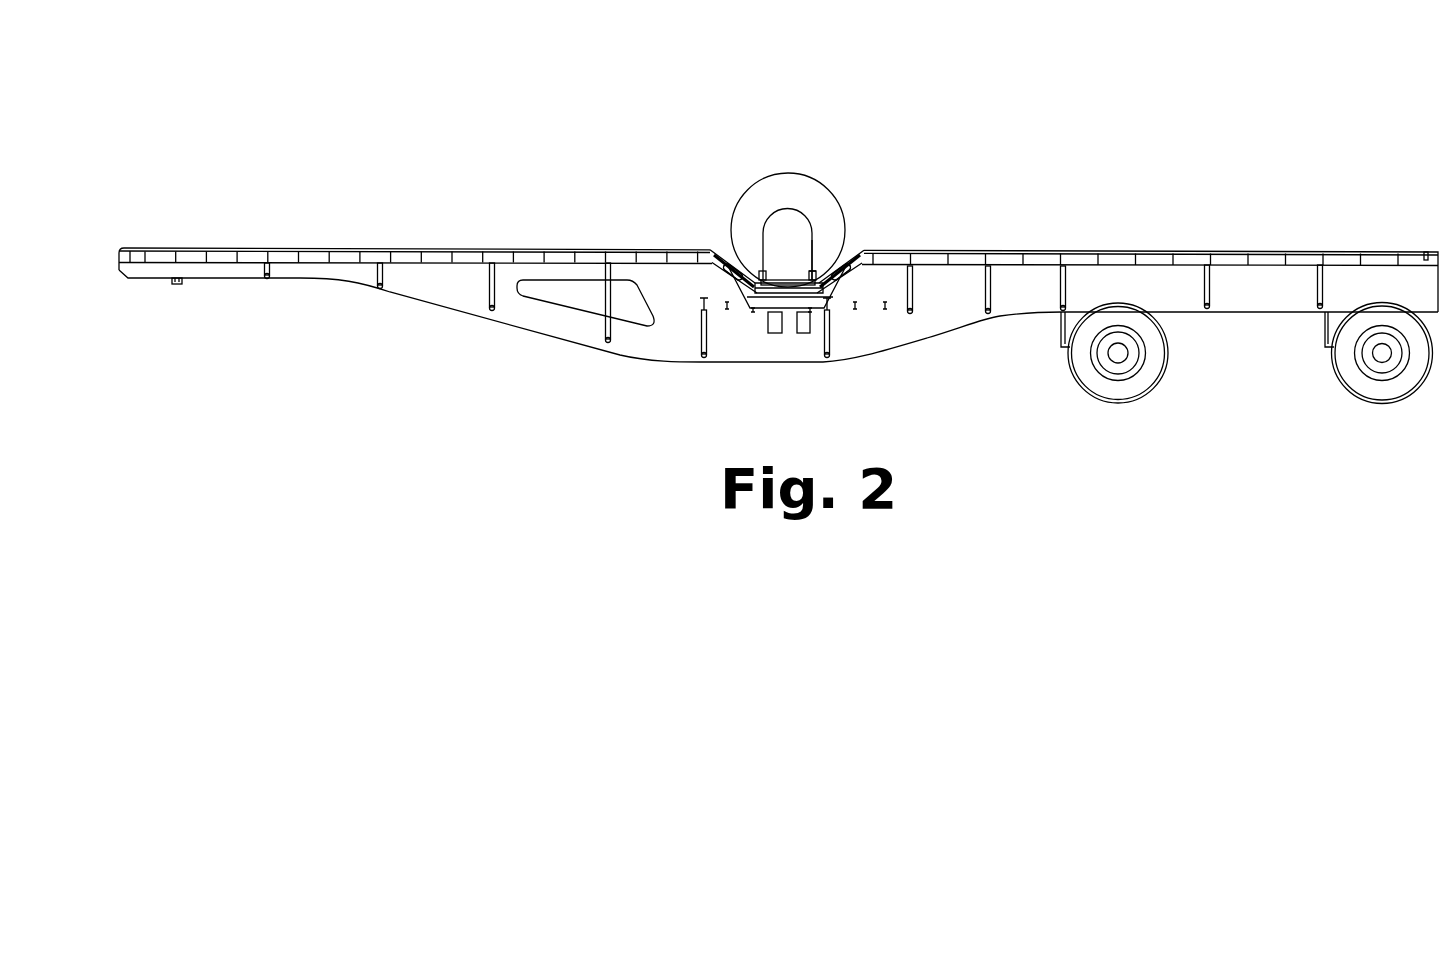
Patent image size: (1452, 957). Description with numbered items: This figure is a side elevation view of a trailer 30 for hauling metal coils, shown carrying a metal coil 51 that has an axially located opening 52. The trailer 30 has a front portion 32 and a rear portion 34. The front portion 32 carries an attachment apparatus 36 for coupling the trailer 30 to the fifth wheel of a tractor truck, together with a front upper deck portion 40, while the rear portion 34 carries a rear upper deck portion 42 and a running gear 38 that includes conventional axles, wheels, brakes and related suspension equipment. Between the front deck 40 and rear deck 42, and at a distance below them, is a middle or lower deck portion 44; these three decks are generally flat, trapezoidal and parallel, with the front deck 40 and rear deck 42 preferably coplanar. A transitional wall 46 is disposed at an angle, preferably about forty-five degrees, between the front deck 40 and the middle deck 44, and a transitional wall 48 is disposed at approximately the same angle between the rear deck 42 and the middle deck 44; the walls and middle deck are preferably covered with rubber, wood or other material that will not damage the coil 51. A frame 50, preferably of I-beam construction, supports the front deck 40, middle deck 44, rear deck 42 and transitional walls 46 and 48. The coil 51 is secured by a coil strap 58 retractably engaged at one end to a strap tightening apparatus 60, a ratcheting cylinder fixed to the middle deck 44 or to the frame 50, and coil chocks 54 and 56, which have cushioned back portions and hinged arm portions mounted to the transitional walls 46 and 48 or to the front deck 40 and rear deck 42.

The trailer 30 is at (917, 103).
The front portion 32 is at (158, 249).
The rear portion 34 is at (1343, 249).
The attachment apparatus 36 is at (178, 284).
The running gear 38 is at (1393, 427).
The upper deck portion (front deck) 40 is at (590, 252).
The upper deck portion (rear deck) 42 is at (953, 250).
The middle or lower deck portion 44 is at (822, 293).
The transitional wall 46 is at (714, 251).
The transitional wall 48 is at (862, 251).
The frame 50 is at (543, 335).
The metal coil 51 is at (811, 177).
The axially located opening 52 is at (772, 210).
The coil chock 54 is at (733, 284).
The coil chock 56 is at (834, 279).
The coil strap 58 is at (813, 257).
The strap tightening apparatus 60 is at (757, 294).